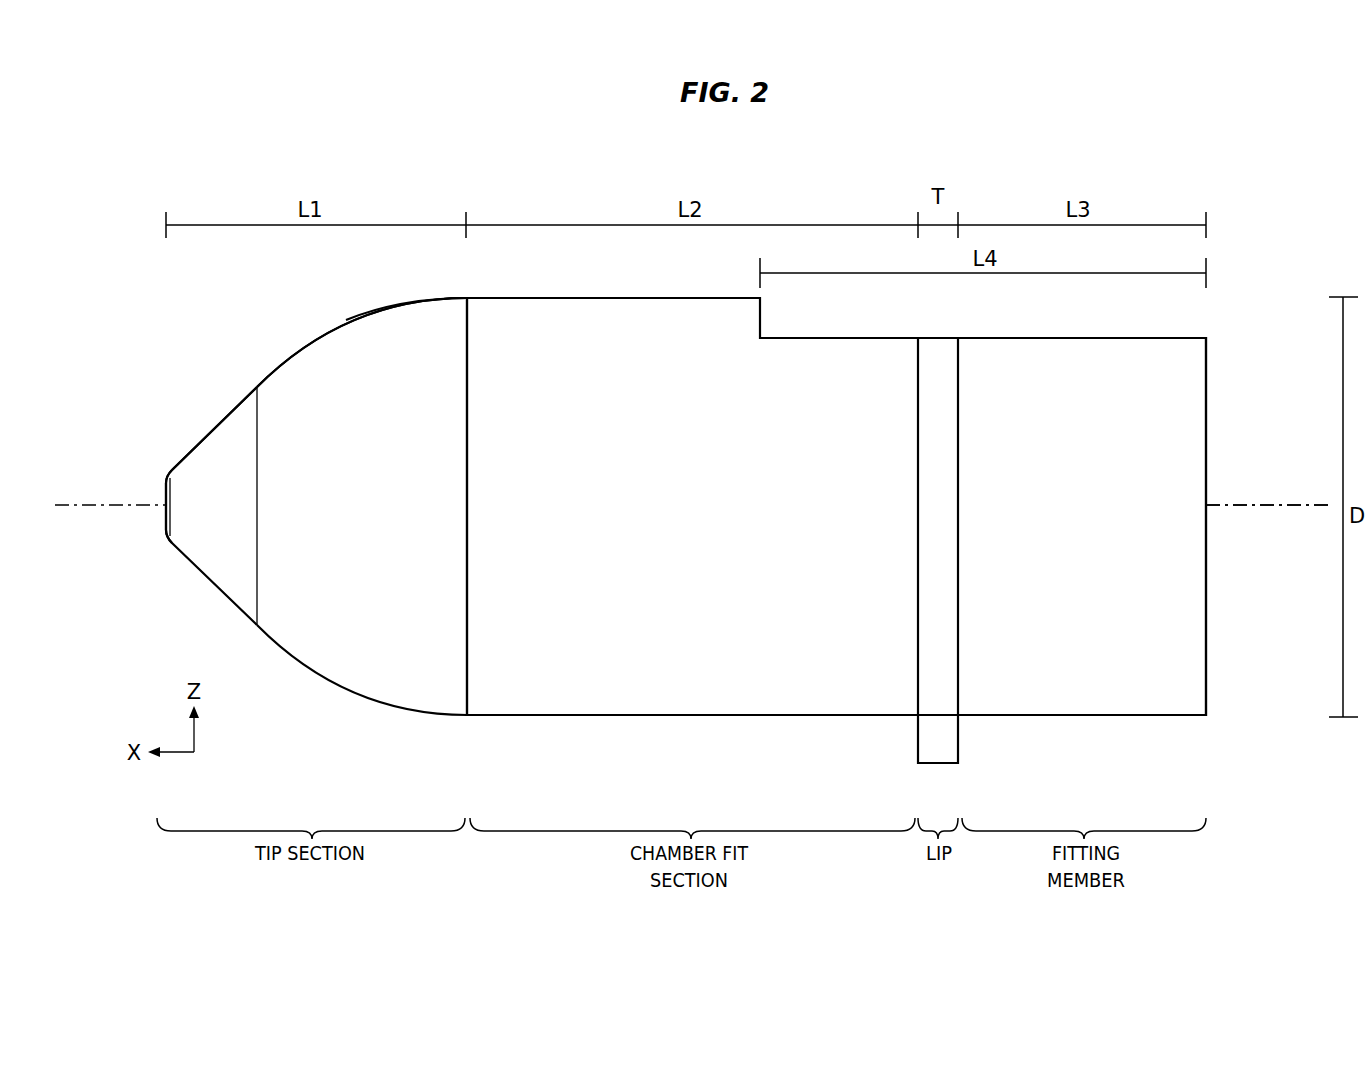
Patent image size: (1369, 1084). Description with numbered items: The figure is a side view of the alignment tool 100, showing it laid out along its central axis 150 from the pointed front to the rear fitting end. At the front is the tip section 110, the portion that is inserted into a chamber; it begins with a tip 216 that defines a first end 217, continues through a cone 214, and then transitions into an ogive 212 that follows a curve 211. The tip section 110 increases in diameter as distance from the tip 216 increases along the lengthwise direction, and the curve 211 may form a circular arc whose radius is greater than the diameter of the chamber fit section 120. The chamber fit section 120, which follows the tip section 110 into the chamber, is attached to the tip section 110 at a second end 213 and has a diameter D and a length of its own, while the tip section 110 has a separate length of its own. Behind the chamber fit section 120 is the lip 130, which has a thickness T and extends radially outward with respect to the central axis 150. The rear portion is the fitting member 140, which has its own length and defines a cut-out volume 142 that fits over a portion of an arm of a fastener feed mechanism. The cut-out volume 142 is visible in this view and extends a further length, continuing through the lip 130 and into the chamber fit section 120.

The alignment tool 100 is at (1321, 221).
The tip section 110 is at (239, 342).
The chamber fit section 120 is at (678, 288).
The lip 130 is at (939, 338).
The fitting member 140 is at (1256, 376).
The cut-out volume 142 is at (1116, 318).
The central axis 150 is at (1258, 505).
The curve 211 is at (315, 331).
The ogive 212 is at (376, 300).
The second end 213 is at (468, 287).
The cone 214 is at (207, 432).
The tip 216 is at (165, 488).
The first end 217 is at (143, 522).